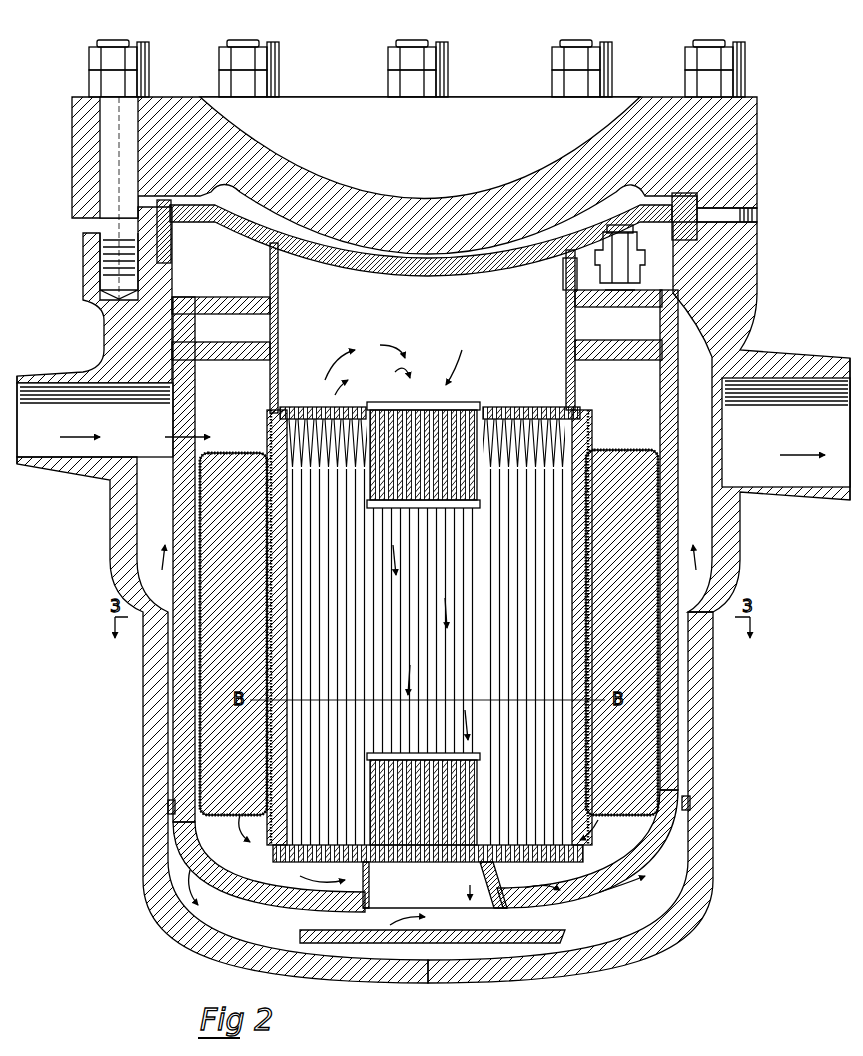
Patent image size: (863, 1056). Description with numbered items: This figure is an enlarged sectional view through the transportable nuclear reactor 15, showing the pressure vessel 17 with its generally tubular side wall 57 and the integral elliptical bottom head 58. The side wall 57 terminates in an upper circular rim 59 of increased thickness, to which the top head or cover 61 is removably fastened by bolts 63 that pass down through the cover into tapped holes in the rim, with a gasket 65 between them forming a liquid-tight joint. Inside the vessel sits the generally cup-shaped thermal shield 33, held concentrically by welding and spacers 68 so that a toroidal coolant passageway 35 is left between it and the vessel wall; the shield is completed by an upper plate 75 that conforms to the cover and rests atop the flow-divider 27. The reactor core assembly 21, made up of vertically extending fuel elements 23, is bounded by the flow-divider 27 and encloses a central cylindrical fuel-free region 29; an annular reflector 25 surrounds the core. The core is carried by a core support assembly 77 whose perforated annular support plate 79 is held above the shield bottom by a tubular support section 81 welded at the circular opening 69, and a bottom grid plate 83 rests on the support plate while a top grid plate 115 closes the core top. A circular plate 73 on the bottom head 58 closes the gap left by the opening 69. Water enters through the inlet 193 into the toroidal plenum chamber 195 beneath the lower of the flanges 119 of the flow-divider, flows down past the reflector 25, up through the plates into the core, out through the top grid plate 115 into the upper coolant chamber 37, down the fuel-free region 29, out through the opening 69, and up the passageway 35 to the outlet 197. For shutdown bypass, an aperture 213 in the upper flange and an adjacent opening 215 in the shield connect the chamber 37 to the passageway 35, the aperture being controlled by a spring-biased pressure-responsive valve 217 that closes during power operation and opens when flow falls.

The nuclear reactor 15 is at (656, 40).
The pressure vessel 17 is at (716, 643).
The reactor core assembly 21 is at (320, 408).
The fuel elements 23 is at (492, 409).
The annular reflector 25 is at (598, 452).
The flow-divider 27 is at (565, 408).
The fuel-free region 29 is at (418, 399).
The thermal shield 33 is at (680, 361).
The toroidal coolant passageway 35 is at (170, 694).
The upper coolant chamber 37 is at (428, 313).
The side wall 57 is at (706, 718).
The elliptical bottom head 58 is at (540, 958).
The upper circular rim 59 is at (97, 277).
The top head or cover 61 is at (750, 114).
The bolts 63 is at (120, 38).
The gasket 65 is at (752, 204).
The spacers 68 is at (172, 808).
The circular opening 69 is at (510, 906).
The circular plate 73 is at (388, 945).
The upper plate 75 is at (492, 243).
The core support assembly 77 is at (470, 900).
The annular support plate 79 is at (584, 854).
The tubular support section 81 is at (497, 876).
The bottom grid plate 83 is at (358, 866).
The top grid plate 115 is at (523, 409).
The outwardly extending flanges 119 is at (230, 300).
The inlet 193 is at (70, 462).
The toroidal plenum chamber 195 is at (236, 401).
The outlet 197 is at (775, 492).
The aperture 213 is at (602, 310).
The opening 215 is at (563, 270).
The pressure-responsive valve 217 is at (632, 268).